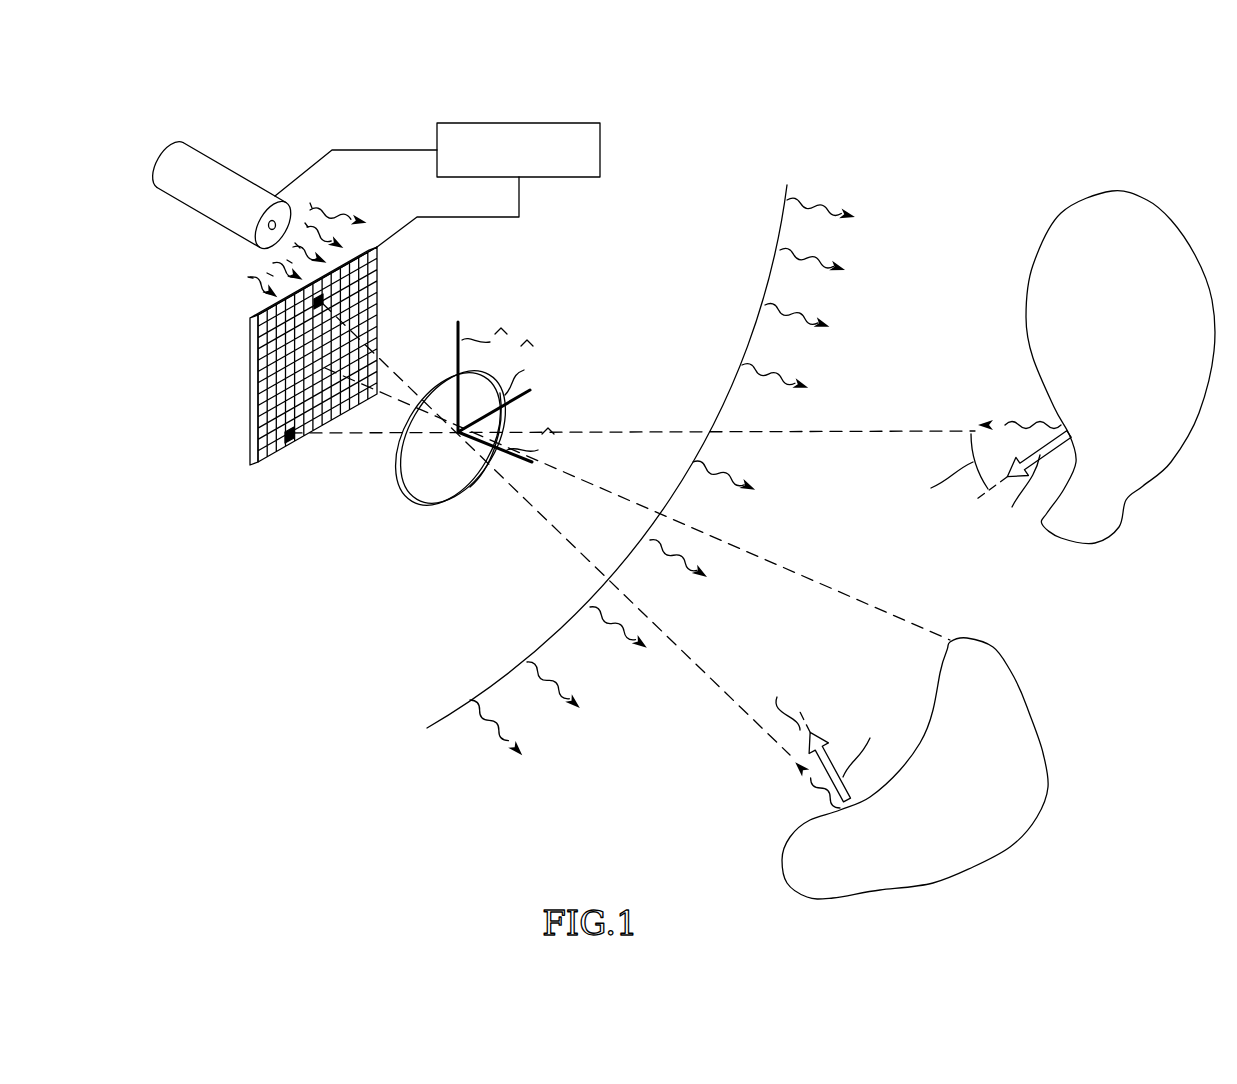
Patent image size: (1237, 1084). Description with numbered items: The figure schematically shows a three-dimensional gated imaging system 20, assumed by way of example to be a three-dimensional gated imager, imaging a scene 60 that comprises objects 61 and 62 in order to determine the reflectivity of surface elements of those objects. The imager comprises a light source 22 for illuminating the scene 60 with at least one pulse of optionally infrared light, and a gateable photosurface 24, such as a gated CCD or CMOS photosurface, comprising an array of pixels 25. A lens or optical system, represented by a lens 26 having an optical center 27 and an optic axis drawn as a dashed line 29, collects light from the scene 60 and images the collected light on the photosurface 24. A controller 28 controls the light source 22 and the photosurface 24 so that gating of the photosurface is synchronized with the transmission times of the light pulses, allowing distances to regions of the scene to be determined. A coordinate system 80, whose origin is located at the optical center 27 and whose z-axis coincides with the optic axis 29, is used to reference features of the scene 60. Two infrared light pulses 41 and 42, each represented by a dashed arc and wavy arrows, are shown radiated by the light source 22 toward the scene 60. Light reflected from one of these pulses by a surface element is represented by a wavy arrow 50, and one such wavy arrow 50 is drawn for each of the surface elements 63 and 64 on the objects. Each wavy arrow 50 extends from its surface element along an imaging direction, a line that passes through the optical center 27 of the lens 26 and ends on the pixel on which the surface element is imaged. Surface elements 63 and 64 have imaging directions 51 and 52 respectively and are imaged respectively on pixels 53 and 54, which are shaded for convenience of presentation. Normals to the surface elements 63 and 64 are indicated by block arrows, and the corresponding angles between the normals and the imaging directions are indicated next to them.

The 3D gated imaging system 20 is at (680, 112).
The light source 22 is at (198, 170).
The gateable photosurface 24 is at (232, 438).
The pixels 25 is at (265, 378).
The lens 26 is at (387, 510).
The optical center 27 is at (452, 447).
The controller 28 is at (600, 148).
The optic axis 29 is at (600, 490).
The IR light pulse 41 is at (777, 172).
The IR light pulse 42 is at (241, 260).
The wavy arrow 50 is at (992, 424).
The imaging direction 51 is at (851, 431).
The imaging direction 52 is at (733, 693).
The pixel 53 is at (288, 448).
The pixel 54 is at (322, 298).
The scene 60 is at (1133, 175).
The object 61 is at (1102, 296).
The object 62 is at (997, 782).
The surface element 63 is at (1066, 434).
The surface element 64 is at (860, 805).
The coordinate system 80 is at (470, 322).